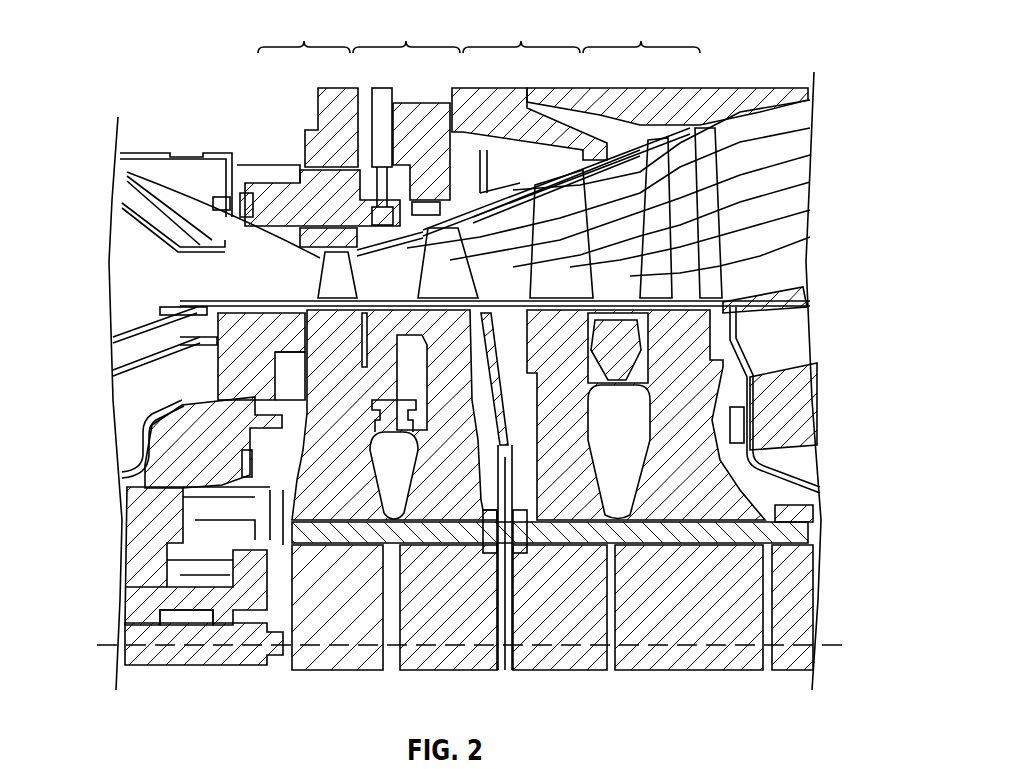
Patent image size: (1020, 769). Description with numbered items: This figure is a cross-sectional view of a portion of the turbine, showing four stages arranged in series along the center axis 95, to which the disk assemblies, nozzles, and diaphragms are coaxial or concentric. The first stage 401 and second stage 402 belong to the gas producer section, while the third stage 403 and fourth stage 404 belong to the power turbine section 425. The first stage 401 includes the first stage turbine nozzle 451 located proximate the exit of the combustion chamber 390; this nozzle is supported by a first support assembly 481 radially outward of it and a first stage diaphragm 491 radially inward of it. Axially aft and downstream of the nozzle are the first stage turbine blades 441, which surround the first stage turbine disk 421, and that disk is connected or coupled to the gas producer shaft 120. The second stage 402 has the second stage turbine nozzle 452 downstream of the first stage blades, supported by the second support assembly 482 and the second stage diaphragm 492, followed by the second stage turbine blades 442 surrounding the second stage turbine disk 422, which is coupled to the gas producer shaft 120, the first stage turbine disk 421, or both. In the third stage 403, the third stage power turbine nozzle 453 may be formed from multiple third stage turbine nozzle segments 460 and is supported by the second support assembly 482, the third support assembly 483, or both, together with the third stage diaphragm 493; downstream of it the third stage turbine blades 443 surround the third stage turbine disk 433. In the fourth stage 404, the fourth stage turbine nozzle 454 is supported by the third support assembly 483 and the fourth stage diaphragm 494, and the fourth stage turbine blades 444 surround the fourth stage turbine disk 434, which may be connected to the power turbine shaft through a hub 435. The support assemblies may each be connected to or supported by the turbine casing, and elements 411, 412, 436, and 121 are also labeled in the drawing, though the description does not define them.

The first stage 401 is at (304, 30).
The second stage 402 is at (406, 30).
The third stage 403 is at (521, 30).
The fourth stage 404 is at (641, 30).
The inner casing 411 is at (325, 230).
The casing segment 412 is at (412, 140).
The first stage turbine blades 441 is at (127, 170).
The second stage turbine blades 442 is at (812, 129).
The third stage turbine blades 443 is at (812, 183).
The fourth stage turbine blades 444 is at (812, 238).
The first stage turbine nozzle 451 is at (127, 203).
The second stage turbine nozzle 452 is at (812, 101).
The third stage power turbine nozzle 453 is at (812, 156).
The fourth stage turbine nozzle 454 is at (812, 211).
The third stage turbine nozzle segments 460 is at (513, 187).
The first support assembly 481 is at (305, 147).
The second support assembly 482 is at (330, 110).
The third support assembly 483 is at (497, 97).
The combustion chamber 390 is at (123, 275).
The first stage diaphragm 491 is at (243, 313).
The second stage diaphragm 492 is at (143, 460).
The third stage diaphragm 493 is at (440, 405).
The fourth stage diaphragm 494 is at (703, 299).
The first stage turbine disk 421 is at (388, 370).
The second stage turbine disk 422 is at (430, 405).
The power turbine section 425 is at (187, 578).
The third stage turbine disk 433 is at (572, 405).
The fourth stage turbine disk 434 is at (703, 390).
The hub 435 is at (647, 513).
The rotor shaft 436 is at (810, 615).
The shaft 121 is at (125, 612).
The gas producer shaft 120 is at (192, 662).
The center axis 95 is at (463, 645).